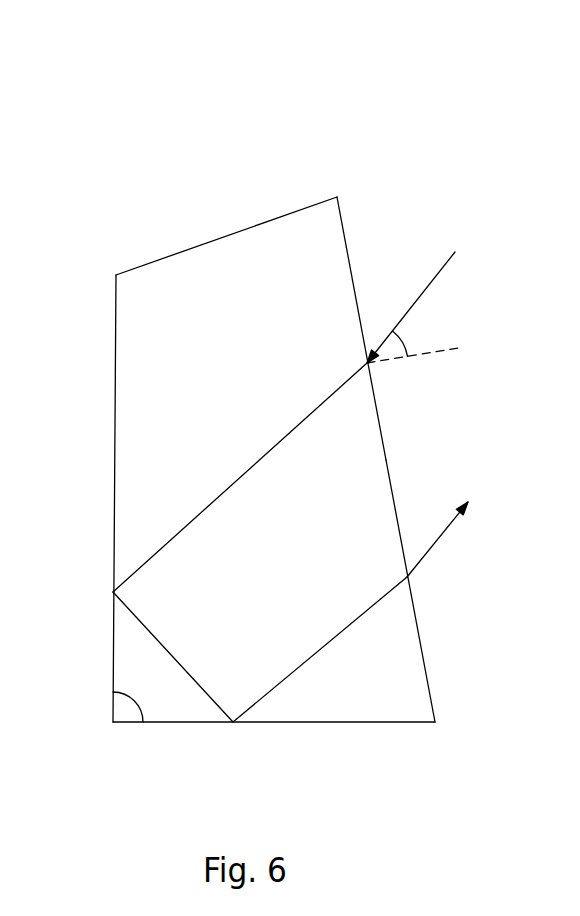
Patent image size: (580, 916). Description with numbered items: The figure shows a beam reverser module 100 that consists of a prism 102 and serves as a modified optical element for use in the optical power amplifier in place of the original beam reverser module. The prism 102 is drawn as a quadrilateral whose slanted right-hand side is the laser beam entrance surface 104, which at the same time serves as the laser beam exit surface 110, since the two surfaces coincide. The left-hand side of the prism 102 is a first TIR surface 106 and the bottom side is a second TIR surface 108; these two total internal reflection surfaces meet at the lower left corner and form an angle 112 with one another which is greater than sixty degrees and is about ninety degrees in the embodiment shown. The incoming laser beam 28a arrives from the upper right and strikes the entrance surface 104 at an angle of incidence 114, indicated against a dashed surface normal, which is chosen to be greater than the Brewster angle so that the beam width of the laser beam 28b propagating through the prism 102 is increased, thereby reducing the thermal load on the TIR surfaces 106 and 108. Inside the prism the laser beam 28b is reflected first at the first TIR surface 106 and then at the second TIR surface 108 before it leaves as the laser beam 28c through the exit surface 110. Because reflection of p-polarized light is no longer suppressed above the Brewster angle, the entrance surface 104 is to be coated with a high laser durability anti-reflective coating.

The beam reverser module 100 is at (266, 414).
The prism 102 is at (213, 263).
The laser beam entrance surface 104 is at (358, 250).
The first TIR surface 106 is at (110, 574).
The second TIR surface 108 is at (173, 739).
The laser beam exit surface 110 is at (440, 676).
The angle 112 is at (122, 713).
The angle of incidence 114 is at (402, 353).
The incoming laser beam 28a is at (452, 256).
The laser beam 28b is at (177, 658).
The laser beam 28c is at (448, 527).